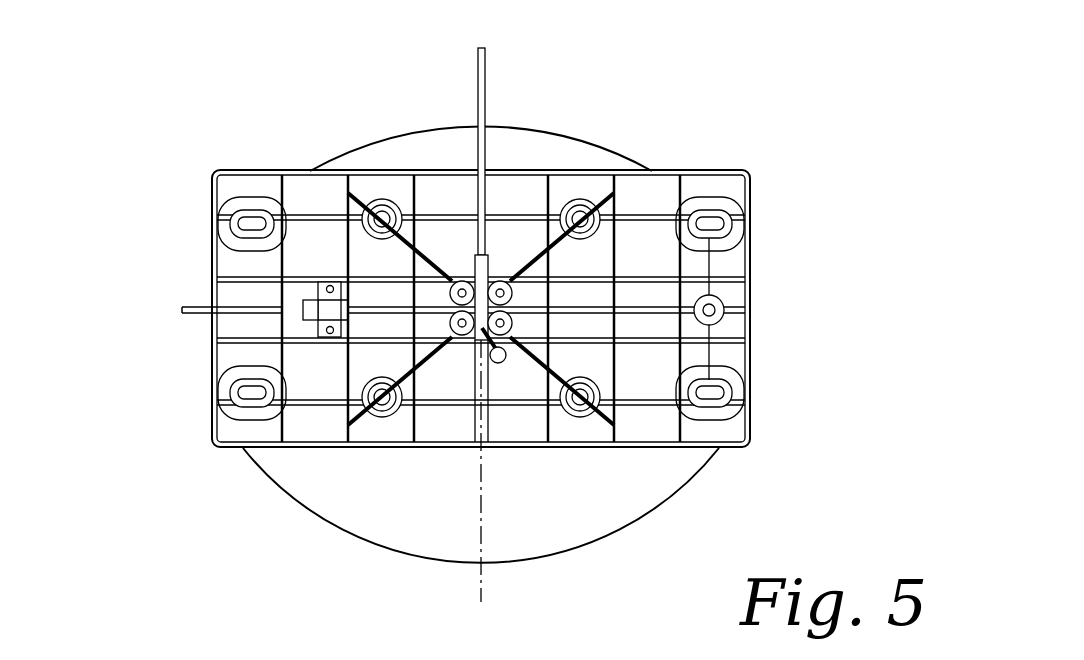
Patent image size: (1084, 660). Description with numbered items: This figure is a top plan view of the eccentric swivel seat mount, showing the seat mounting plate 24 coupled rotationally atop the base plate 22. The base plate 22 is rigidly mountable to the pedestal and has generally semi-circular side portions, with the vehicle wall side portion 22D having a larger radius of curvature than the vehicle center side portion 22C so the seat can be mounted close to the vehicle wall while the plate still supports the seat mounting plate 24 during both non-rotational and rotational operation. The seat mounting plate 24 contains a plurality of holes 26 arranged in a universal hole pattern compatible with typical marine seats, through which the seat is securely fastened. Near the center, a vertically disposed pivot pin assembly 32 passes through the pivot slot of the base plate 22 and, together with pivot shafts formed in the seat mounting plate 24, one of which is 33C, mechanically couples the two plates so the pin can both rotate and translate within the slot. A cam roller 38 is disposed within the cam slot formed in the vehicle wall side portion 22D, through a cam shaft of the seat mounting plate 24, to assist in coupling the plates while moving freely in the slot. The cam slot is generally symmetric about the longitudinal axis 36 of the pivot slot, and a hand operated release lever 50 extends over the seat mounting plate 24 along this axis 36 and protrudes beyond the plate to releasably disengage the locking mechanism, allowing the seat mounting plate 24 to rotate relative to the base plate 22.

The base plate 22 is at (481, 346).
The vehicle center side portion 22C is at (558, 527).
The vehicle wall side portion 22D is at (417, 150).
The seat mounting plate 24 is at (712, 167).
The holes 26 is at (382, 219).
The pivot pin assembly 32 is at (500, 293).
The pivot link 33C is at (460, 326).
The longitudinal axis 36 is at (480, 590).
The cam roller 38 is at (724, 315).
The release lever 50 is at (483, 82).